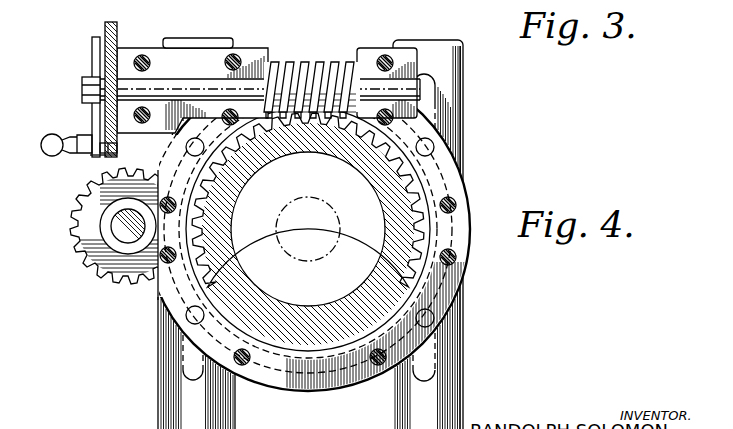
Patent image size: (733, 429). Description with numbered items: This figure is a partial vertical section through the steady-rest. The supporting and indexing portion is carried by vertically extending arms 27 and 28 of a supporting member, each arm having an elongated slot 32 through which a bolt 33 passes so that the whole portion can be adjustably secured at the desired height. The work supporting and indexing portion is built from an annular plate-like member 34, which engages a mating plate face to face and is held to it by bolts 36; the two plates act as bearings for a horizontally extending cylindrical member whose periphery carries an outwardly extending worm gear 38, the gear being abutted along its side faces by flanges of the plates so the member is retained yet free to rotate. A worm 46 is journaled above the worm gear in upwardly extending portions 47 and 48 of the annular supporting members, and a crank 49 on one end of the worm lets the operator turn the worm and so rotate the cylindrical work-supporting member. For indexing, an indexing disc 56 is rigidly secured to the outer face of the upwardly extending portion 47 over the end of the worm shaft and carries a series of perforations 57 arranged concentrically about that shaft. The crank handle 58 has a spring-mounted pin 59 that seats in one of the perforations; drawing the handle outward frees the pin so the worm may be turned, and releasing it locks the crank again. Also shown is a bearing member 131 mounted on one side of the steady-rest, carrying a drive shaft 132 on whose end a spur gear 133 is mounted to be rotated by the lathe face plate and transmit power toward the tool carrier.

The vertically extending arm 27 is at (198, 39).
The vertically extending arm 28 is at (430, 41).
The elongated slot 32 is at (190, 368).
The bolt 33 is at (434, 147).
The annular plate-like member 34 is at (287, 392).
The bolt 36 is at (225, 62).
The worm gear 38 is at (433, 172).
The worm 46 is at (318, 56).
The upwardly extending portion 47 is at (255, 46).
The upwardly extending portion 48 is at (368, 48).
The crank 49 is at (92, 58).
The indexing disc 56 is at (116, 24).
The perforation 57 is at (100, 34).
The crank handle 58 is at (50, 134).
The pin 59 is at (112, 148).
The bearing member 131 is at (130, 258).
The drive shaft 132 is at (100, 230).
The spur gear 133 is at (88, 200).